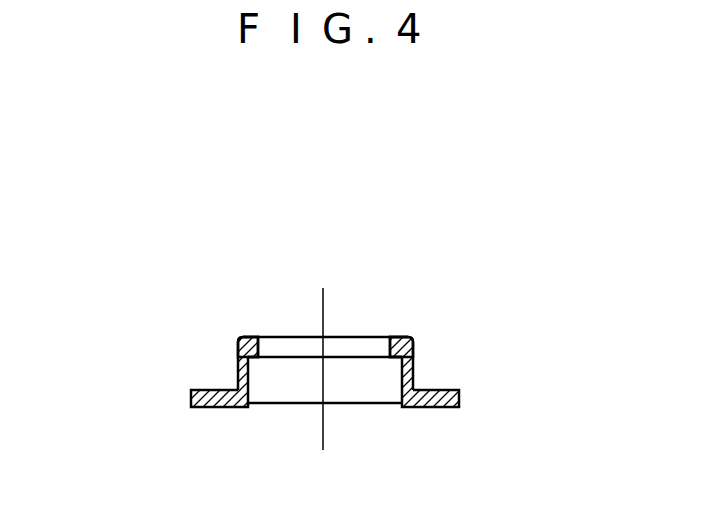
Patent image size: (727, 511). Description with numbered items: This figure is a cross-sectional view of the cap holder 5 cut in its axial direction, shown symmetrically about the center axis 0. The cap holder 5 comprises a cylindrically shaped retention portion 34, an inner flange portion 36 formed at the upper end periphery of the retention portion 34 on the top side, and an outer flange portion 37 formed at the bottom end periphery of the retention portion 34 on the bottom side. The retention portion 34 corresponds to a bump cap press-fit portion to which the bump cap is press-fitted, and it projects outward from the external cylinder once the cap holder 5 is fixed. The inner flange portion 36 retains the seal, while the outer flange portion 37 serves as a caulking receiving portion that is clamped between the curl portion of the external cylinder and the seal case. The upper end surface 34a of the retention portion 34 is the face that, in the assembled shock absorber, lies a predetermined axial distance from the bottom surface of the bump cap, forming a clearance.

The axis 0 is at (330, 316).
The cap holder 5 is at (315, 281).
The retention portion 34 is at (518, 302).
The upper end surface 34a is at (249, 337).
The inner flange portion 36 is at (400, 337).
The outer flange portion 37 is at (547, 376).